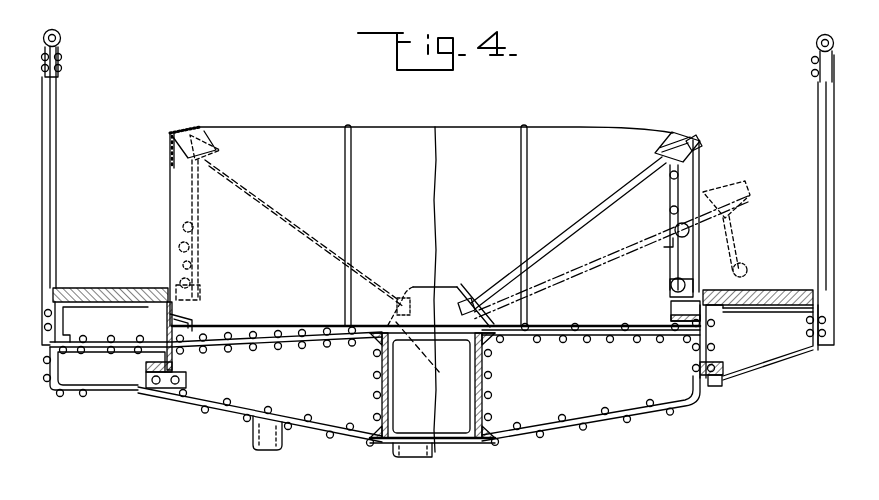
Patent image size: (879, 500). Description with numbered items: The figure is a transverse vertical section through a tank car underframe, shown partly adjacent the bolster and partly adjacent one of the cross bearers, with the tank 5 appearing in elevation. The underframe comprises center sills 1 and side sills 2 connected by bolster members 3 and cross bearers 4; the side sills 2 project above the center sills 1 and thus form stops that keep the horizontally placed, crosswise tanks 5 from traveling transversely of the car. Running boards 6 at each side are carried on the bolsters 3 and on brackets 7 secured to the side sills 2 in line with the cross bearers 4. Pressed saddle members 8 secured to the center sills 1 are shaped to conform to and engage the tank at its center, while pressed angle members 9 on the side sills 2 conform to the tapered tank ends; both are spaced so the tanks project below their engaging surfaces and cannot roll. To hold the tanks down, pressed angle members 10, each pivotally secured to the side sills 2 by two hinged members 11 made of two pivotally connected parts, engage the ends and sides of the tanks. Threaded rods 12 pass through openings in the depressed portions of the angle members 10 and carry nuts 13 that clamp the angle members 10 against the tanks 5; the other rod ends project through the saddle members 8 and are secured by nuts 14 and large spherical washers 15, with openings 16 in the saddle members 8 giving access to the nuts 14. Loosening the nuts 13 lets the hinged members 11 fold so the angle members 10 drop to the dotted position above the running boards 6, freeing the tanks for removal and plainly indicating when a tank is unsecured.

The center sills 1 is at (393, 446).
The side sills 2 is at (160, 372).
The bolster members 3 is at (244, 397).
The cross bearers 4 is at (619, 390).
The tanks 5 is at (496, 147).
The running boards 6 is at (94, 297).
The brackets 7 is at (770, 346).
The saddle members 8 is at (461, 299).
The angle members 9 is at (196, 321).
The pressed angle members 10 is at (183, 128).
The hinged members 11 is at (200, 252).
The threaded rods 12 is at (593, 218).
The nuts 13 is at (205, 132).
The nuts 14 is at (438, 287).
The spherical washers 15 is at (466, 316).
The openings 16 is at (440, 285).